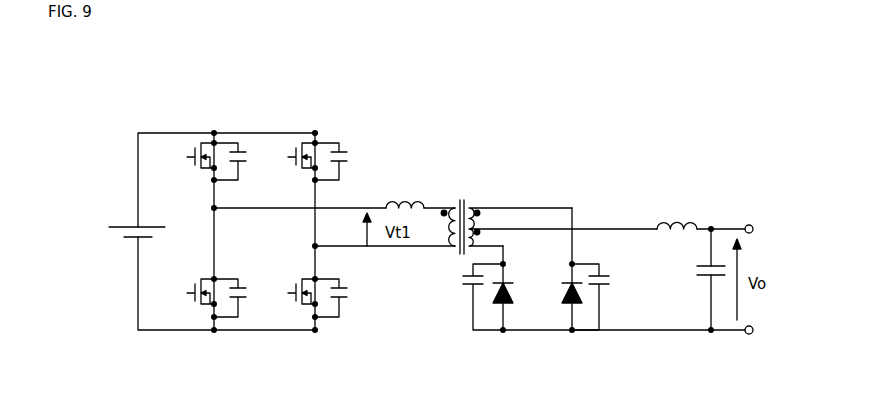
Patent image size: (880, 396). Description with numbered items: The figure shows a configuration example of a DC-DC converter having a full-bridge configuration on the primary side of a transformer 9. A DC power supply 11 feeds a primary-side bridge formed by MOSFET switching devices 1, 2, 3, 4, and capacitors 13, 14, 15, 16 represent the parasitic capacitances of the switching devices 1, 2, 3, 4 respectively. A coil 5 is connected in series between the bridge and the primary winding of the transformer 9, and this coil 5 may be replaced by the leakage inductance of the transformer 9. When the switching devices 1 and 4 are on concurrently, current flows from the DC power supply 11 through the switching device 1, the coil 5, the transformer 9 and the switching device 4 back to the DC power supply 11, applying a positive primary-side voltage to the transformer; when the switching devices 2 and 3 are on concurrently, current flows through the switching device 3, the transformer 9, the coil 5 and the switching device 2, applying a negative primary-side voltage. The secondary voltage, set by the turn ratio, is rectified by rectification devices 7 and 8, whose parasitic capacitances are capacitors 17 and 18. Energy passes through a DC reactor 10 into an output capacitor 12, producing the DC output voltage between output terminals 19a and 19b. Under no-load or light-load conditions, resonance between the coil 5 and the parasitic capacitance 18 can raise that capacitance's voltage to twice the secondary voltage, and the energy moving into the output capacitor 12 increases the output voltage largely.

The switching device 1 is at (190, 152).
The switching device 2 is at (190, 313).
The switching device 3 is at (291, 152).
The switching device 4 is at (293, 313).
The coil 5 is at (403, 196).
The rectification device 7 is at (510, 315).
The rectification device 8 is at (578, 315).
The transformer 9 is at (455, 198).
The DC reactor 10 is at (668, 213).
The DC power supply 11 is at (116, 216).
The output capacitor 12 is at (695, 277).
The capacitor 13 is at (247, 160).
The capacitor 14 is at (243, 283).
The capacitor 15 is at (344, 145).
The capacitor 16 is at (344, 283).
The capacitor 17 is at (456, 268).
The capacitor 18 is at (614, 282).
The output terminal 19a is at (754, 226).
The output terminal 19b is at (754, 328).